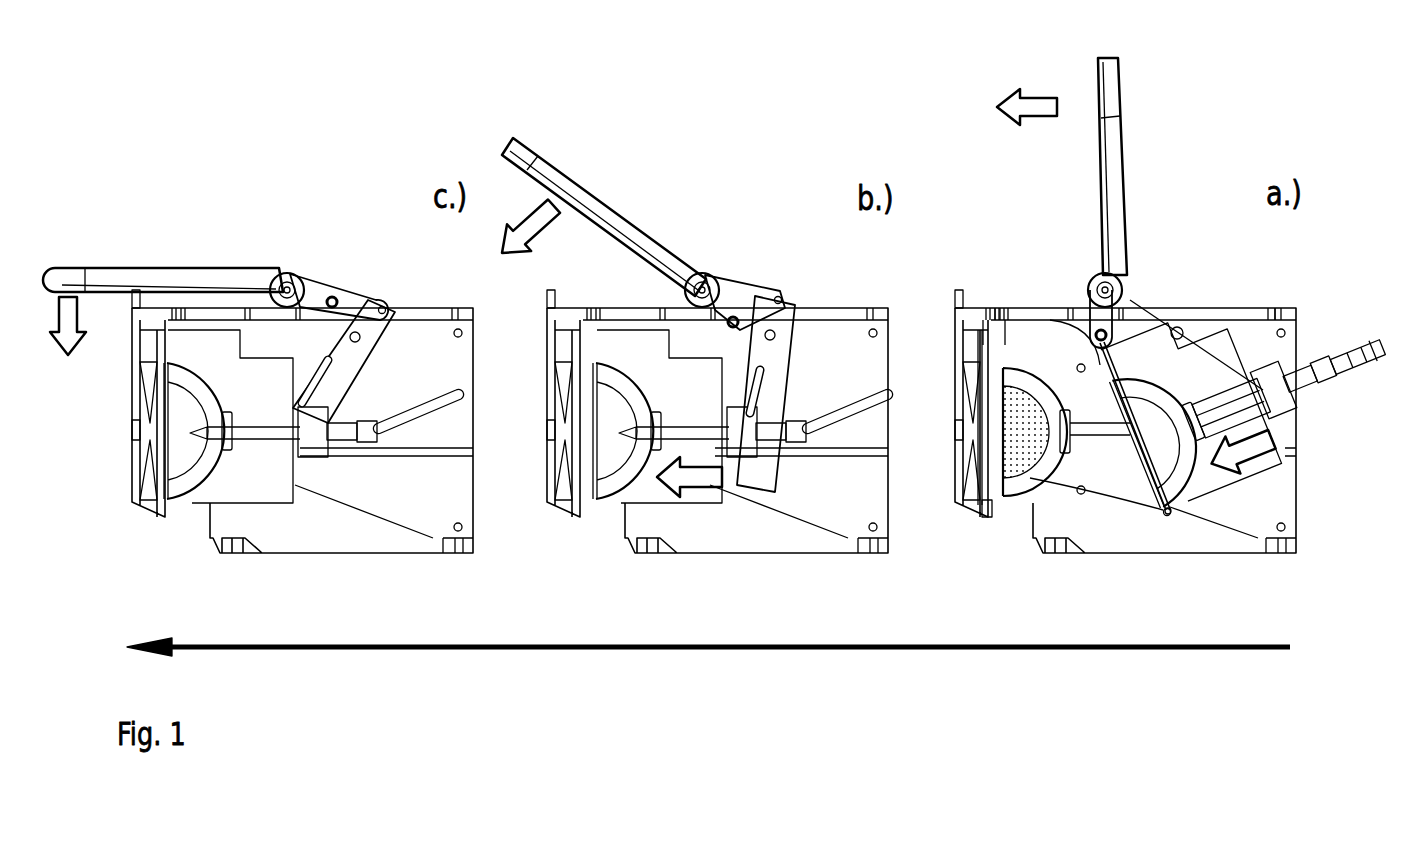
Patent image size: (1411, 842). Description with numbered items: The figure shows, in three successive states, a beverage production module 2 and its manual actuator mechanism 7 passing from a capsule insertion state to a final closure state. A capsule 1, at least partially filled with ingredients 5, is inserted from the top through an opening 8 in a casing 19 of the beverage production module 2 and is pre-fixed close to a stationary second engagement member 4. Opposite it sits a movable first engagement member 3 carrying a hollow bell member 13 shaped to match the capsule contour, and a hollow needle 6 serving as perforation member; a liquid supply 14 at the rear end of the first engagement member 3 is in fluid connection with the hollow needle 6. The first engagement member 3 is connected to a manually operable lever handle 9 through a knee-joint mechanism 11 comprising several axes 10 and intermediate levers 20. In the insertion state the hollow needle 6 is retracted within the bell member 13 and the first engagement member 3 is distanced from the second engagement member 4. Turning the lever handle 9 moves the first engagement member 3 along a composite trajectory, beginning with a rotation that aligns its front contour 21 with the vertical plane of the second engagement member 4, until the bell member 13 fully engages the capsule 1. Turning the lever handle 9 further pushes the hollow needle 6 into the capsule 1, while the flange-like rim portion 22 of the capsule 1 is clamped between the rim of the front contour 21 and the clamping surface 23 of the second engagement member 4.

The capsule 1 is at (187, 512).
The beverage production module 2 is at (335, 235).
The first engagement member 3 is at (275, 357).
The second engagement member 4 is at (148, 512).
The ingredients 5 is at (1015, 380).
The hollow needle 6 is at (255, 447).
The actuator mechanism 7 is at (170, 250).
The opening 8 is at (990, 322).
The lever handle 9 is at (88, 268).
The axis 10 is at (290, 273).
The knee-joint mechanism 11 is at (365, 300).
The hollow bell member 13 is at (1155, 488).
The liquid supply 14 is at (1370, 345).
The casing 19 is at (1290, 312).
The intermediate lever 20 is at (1183, 310).
The front contour 21 is at (1165, 512).
The flange-like rim portion 22 is at (988, 515).
The clamping surface 23 is at (985, 345).